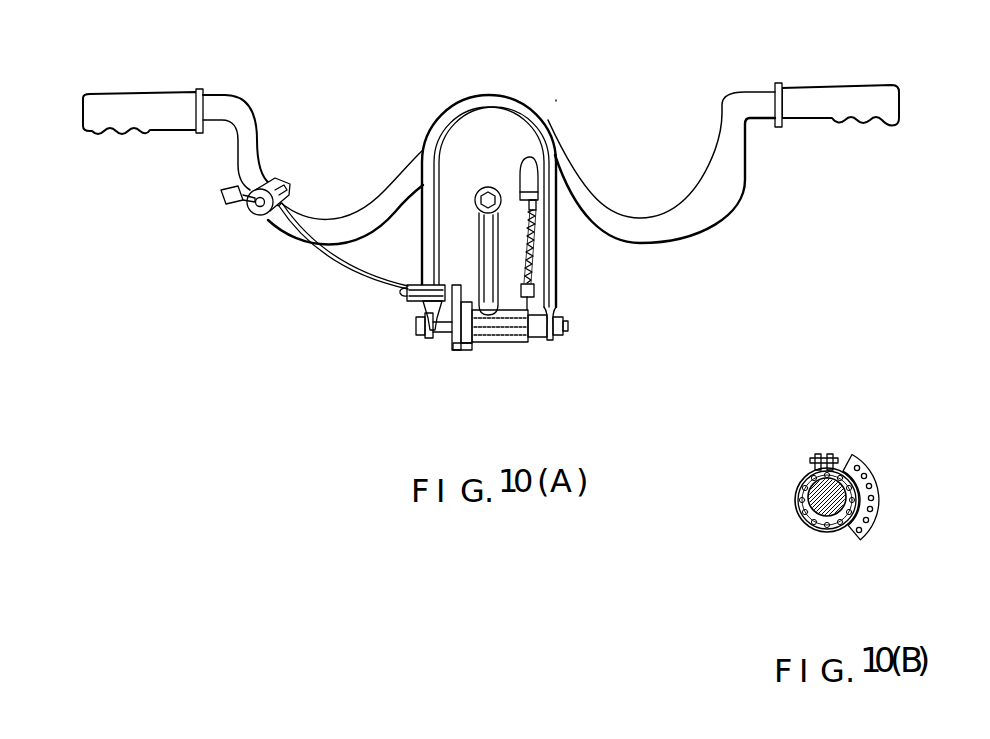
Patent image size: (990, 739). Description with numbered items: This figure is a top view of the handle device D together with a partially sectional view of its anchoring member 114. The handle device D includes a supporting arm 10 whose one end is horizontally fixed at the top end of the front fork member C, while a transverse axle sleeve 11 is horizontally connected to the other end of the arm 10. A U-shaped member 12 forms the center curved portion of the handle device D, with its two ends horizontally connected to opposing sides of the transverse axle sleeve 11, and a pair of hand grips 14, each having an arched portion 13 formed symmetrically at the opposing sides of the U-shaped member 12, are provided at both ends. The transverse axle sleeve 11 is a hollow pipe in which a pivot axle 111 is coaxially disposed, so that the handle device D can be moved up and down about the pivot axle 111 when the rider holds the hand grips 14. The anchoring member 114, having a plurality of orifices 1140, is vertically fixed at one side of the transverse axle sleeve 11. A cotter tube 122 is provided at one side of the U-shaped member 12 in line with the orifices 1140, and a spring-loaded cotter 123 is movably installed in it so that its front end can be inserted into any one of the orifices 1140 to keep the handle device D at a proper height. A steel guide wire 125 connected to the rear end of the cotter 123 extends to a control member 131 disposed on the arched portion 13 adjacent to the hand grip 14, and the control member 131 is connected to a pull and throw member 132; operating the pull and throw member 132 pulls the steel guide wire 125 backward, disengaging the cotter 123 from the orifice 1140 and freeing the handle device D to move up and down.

In FIG. 10A, the supporting arm 10 is at (473, 230).
In FIG. 10A, the transverse axle sleeve 11 is at (516, 333).
In FIG. 10B, the transverse axle sleeve 11 is at (798, 521).
In FIG. 10A, the pivot axle 111 is at (563, 328).
In FIG. 10A, the anchoring member 114 is at (458, 326).
In FIG. 10B, the anchoring member 114 is at (853, 528).
In FIG. 10B, the orifices 1140 is at (854, 453).
In FIG. 10A, the U-shaped member 12 is at (487, 100).
In FIG. 10A, the cotter tube 122 is at (418, 291).
In FIG. 10A, the cotter 123 is at (440, 338).
In FIG. 10A, the steel guide wire 125 is at (350, 276).
In FIG. 10A, the arched portion 13 is at (370, 214).
In FIG. 10A, the control member 131 is at (261, 216).
In FIG. 10A, the pull and throw member 132 is at (233, 200).
In FIG. 10A, the hand grips 14 is at (148, 108).
In FIG. 10A, the front fork member C is at (487, 186).
In FIG. 10A, the handle device D is at (529, 106).